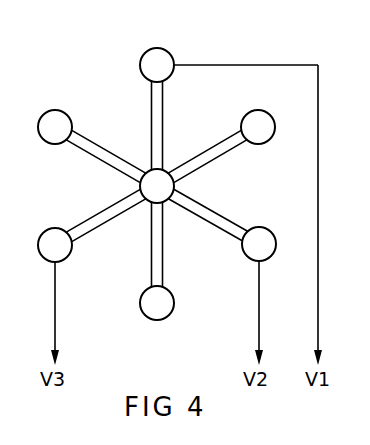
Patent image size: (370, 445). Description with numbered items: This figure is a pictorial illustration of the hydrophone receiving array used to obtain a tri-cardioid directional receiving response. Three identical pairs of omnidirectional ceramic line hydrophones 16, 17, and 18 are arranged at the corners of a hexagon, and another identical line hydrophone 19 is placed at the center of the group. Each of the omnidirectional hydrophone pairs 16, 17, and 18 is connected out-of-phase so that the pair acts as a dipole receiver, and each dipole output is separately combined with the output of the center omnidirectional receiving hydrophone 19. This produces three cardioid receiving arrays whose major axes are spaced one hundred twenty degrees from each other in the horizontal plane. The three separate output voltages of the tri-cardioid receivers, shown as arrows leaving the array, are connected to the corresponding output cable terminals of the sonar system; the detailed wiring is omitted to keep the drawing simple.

The omnidirectional ceramic line hydrophone pair 16 is at (167, 51).
The omnidirectional ceramic line hydrophone pair 17 is at (46, 142).
The omnidirectional ceramic line hydrophone pair 18 is at (269, 141).
The center omnidirectional receiving hydrophone 19 is at (166, 200).